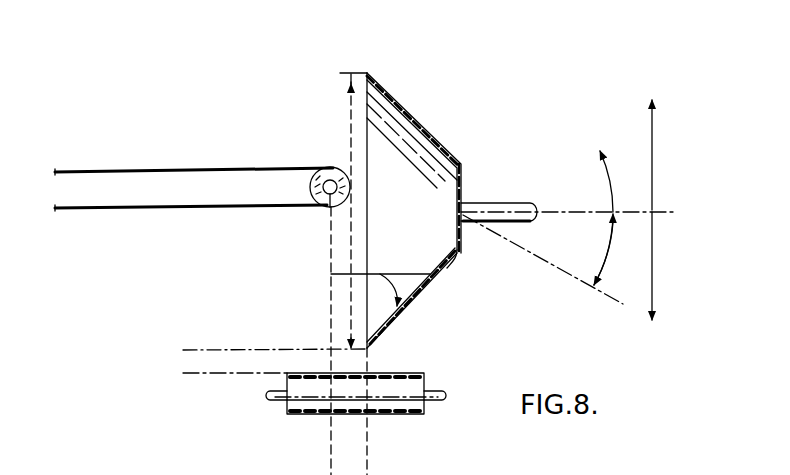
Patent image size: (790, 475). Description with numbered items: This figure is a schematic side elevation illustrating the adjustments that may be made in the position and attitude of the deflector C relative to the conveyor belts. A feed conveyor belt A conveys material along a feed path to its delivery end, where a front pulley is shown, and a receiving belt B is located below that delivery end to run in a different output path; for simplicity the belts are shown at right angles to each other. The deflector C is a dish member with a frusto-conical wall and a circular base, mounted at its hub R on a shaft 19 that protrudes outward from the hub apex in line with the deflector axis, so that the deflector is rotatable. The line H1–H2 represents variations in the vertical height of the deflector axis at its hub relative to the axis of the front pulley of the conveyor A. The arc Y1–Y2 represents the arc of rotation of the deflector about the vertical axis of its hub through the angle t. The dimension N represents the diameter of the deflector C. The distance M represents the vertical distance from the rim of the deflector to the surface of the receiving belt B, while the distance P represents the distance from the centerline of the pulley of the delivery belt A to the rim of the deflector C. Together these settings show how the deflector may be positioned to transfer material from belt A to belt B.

The feed conveyor belt A is at (153, 170).
The deflector C is at (409, 110).
The diameter of the deflector N is at (275, 211).
The shaft 19 is at (480, 204).
The angle t is at (567, 230).
The hub R is at (464, 232).
The belt B is at (390, 373).
The vertical distance from the rim of the deflector to the surface of the receiving M is at (236, 363).
The distance from the centerline of the pulley of the delivery belt to the rim of th P is at (350, 464).
The vertical height variation line end H1 is at (646, 141).
The vertical height variation line end H2 is at (648, 281).
The arc of rotation end Y1 is at (598, 170).
The arc of rotation end Y2 is at (595, 271).